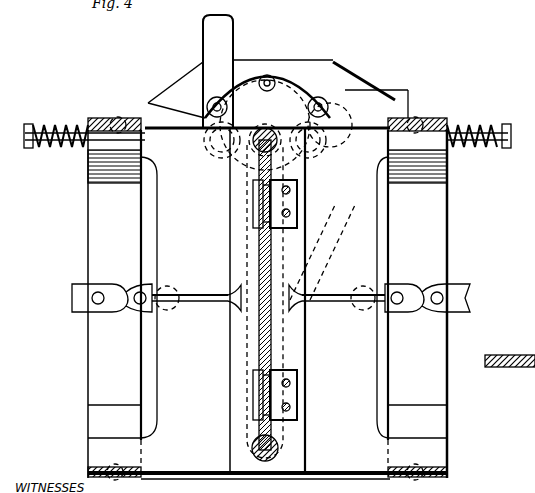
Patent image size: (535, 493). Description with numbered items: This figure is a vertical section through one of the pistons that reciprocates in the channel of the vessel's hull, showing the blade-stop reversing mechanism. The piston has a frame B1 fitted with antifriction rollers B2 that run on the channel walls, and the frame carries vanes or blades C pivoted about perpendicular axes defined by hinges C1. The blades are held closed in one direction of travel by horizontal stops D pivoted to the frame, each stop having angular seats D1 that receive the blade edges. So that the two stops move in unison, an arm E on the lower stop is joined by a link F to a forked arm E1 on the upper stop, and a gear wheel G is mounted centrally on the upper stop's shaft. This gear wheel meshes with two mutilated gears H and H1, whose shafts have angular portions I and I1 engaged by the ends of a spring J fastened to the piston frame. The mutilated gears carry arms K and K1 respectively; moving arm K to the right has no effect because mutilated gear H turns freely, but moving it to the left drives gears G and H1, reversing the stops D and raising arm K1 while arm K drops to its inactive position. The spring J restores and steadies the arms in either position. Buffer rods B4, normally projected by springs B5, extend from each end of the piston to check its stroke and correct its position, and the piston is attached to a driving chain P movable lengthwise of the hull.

The frame B1 is at (267, 304).
The antifriction rollers B2 is at (138, 108).
The buffer rods B4 is at (36, 148).
The springs B5 is at (47, 124).
The blades C is at (252, 240).
The hinges C1 is at (255, 212).
The stops D is at (252, 148).
The angular seats D1 is at (280, 148).
The arm E is at (245, 360).
The arm E1 is at (300, 212).
The link F is at (322, 258).
The gear wheel G is at (250, 192).
The mutilated gear H is at (210, 132).
The mutilated gear H1 is at (318, 112).
The angular portion I is at (205, 112).
The angular portion I1 is at (335, 95).
The spring J is at (275, 75).
The arm K is at (218, 60).
The arm K1 is at (398, 96).
The chain P is at (99, 290).